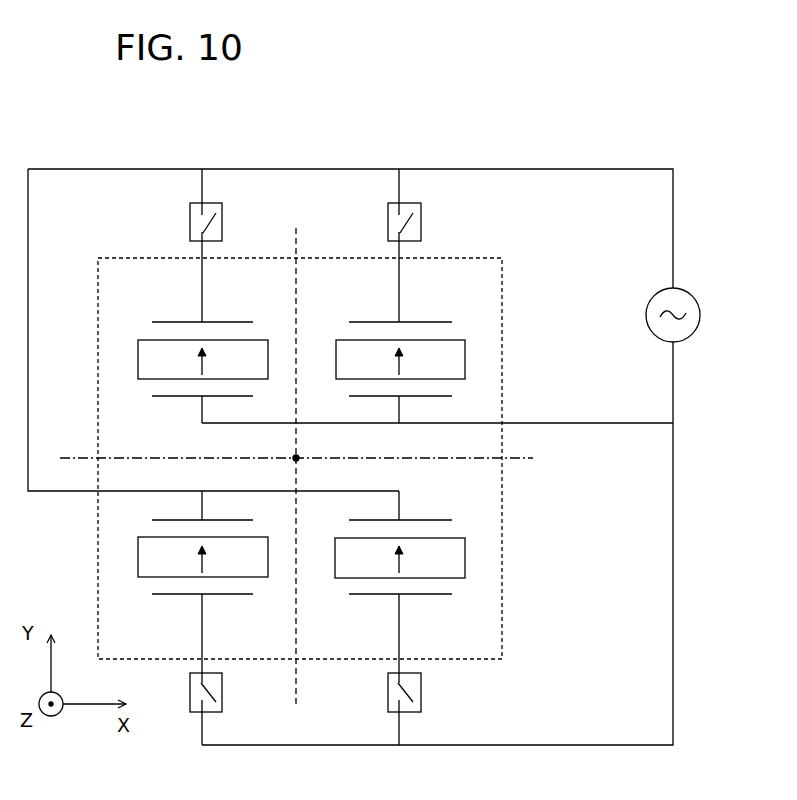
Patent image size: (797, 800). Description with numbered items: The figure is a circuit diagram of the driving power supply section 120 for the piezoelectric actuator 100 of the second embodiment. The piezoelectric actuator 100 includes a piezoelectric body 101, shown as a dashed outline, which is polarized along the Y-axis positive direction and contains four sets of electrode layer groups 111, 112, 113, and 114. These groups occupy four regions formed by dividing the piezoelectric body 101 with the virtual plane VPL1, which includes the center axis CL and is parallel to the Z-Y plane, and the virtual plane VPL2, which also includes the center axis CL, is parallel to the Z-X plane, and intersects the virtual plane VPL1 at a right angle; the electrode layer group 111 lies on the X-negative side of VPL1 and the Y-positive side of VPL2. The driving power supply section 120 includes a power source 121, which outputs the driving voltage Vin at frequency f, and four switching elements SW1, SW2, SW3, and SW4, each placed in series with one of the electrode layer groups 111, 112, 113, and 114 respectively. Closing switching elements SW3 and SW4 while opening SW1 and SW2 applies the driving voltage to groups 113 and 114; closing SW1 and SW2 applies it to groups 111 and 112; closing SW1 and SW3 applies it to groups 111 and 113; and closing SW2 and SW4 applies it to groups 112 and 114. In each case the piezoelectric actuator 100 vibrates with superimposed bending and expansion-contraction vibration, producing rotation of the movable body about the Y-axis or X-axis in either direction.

The piezoelectric actuator 100 is at (95, 247).
The piezoelectric body 101 is at (503, 300).
The electrode layer group 111 is at (138, 322).
The electrode layer group 112 is at (138, 520).
The electrode layer group 113 is at (466, 322).
The electrode layer group 114 is at (468, 520).
The driving power supply section 120 is at (694, 149).
The power source 121 is at (699, 320).
The switching element SW1 is at (182, 245).
The switching element SW2 is at (182, 669).
The switching element SW3 is at (432, 245).
The switching element SW4 is at (432, 669).
The virtual plane VPL1 is at (296, 455).
The virtual plane VPL2 is at (325, 458).
The center axis CL is at (297, 460).